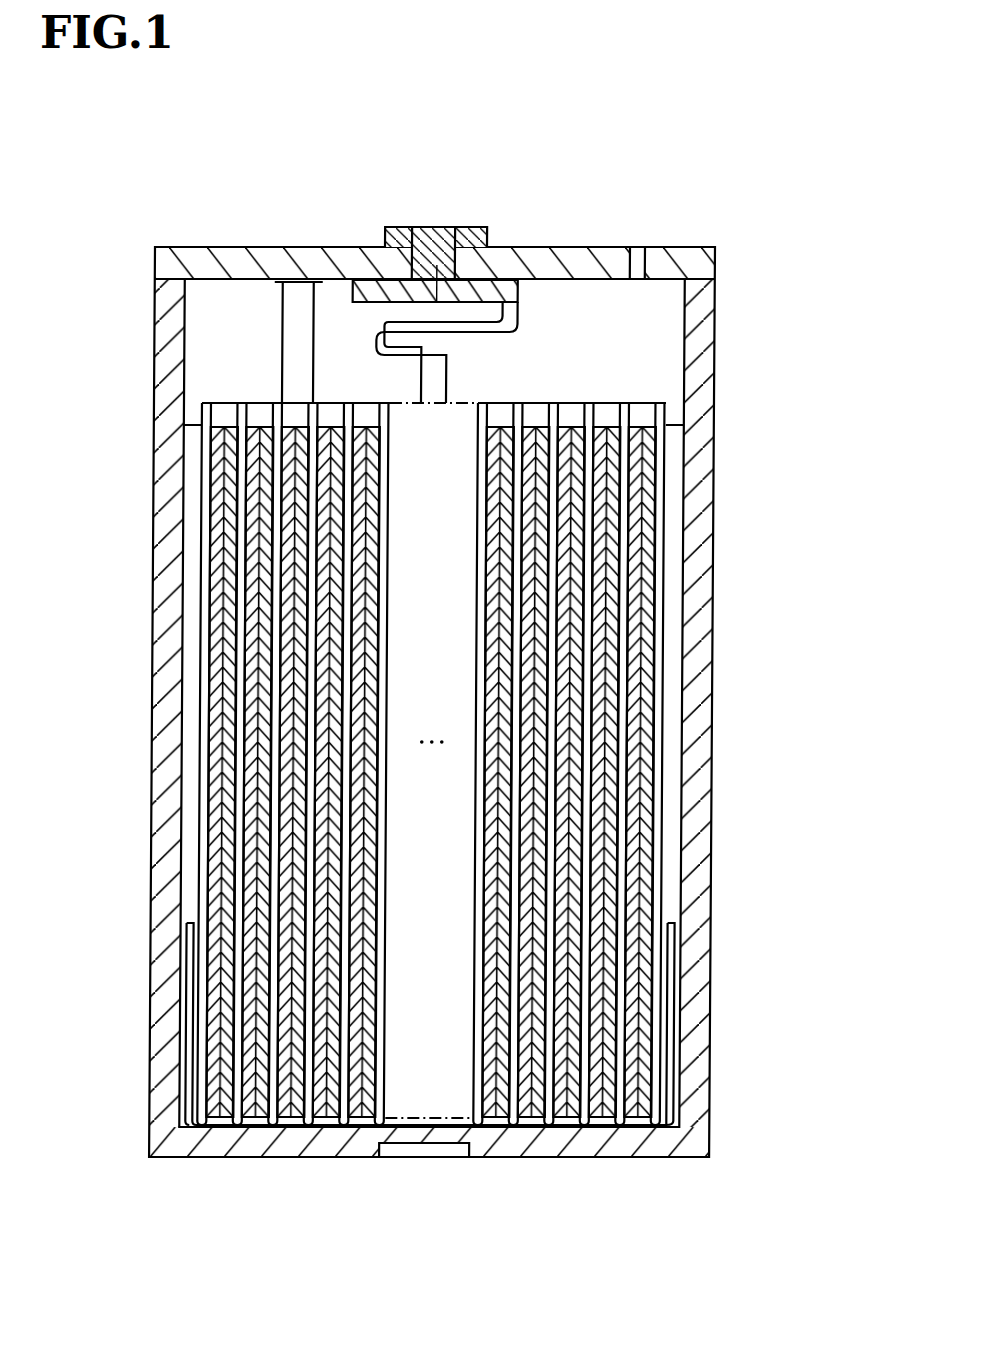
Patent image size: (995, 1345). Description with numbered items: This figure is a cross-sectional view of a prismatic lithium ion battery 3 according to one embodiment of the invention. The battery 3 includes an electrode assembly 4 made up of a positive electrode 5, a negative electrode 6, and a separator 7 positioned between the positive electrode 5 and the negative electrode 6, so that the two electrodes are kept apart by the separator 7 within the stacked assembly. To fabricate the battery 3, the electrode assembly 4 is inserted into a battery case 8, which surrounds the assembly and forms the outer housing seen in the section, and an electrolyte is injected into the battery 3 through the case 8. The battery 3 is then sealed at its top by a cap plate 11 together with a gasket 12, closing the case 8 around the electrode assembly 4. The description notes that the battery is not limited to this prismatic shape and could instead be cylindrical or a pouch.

The battery 3 is at (467, 649).
The electrode assembly 4 is at (417, 710).
The positive electrode 5 is at (640, 990).
The negative electrode 6 is at (258, 932).
The separator 7 is at (223, 1053).
The battery case 8 is at (167, 378).
The cap plate 11 is at (551, 258).
The gasket 12 is at (391, 229).